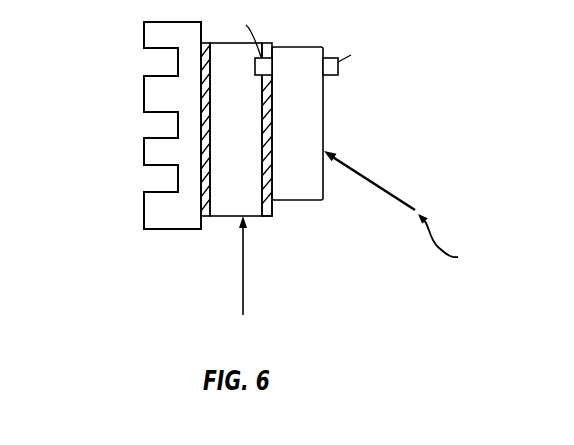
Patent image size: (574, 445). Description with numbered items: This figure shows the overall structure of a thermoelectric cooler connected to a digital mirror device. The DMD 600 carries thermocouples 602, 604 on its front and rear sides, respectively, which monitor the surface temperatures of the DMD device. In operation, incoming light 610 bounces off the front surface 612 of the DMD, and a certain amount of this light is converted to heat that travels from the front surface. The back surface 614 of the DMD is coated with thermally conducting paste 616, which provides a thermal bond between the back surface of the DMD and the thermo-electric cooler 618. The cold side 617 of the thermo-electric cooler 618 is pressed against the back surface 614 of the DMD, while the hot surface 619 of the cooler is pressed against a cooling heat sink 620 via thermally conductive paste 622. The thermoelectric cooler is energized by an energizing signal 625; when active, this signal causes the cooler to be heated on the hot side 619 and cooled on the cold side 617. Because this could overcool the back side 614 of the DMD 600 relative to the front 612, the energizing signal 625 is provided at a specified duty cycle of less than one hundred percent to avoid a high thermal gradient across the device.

The DMD 600 is at (302, 109).
The thermocouple 602 is at (333, 75).
The thermocouple 604 is at (266, 58).
The incoming light 610 is at (392, 194).
The front surface 612 is at (325, 200).
The back surface 614 is at (273, 193).
The thermally conducting paste 616 is at (267, 218).
The cold side 617 is at (262, 91).
The thermo-electric cooler 618 is at (230, 208).
The hot surface 619 is at (208, 182).
The cooling heat sink 620 is at (143, 213).
The thermally conductive paste 622 is at (201, 117).
The energizing signal 625 is at (243, 292).